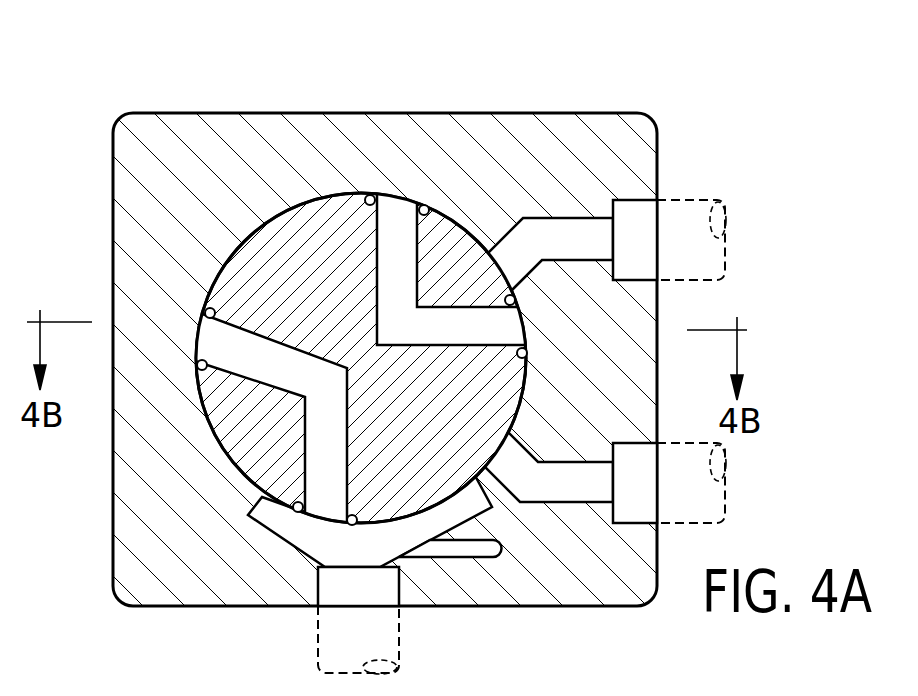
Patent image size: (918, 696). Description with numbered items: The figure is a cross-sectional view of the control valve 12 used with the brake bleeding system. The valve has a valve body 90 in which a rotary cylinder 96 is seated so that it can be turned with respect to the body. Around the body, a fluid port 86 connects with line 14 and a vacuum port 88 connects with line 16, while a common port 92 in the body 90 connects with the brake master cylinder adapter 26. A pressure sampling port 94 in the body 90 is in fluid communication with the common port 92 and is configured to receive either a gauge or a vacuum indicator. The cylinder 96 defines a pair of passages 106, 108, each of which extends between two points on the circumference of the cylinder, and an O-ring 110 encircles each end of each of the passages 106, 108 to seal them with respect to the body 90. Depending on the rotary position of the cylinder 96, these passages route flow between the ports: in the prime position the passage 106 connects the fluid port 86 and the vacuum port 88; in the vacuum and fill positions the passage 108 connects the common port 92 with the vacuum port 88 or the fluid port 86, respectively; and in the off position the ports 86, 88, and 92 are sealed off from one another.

The control valve 12 is at (459, 308).
The valve body 90 is at (245, 177).
The rotary cylinder 96 is at (322, 288).
The passage 106 is at (415, 337).
The passage 108 is at (246, 362).
The O-ring 110 is at (425, 206).
The fluid port 86 is at (652, 255).
The line 14 is at (703, 255).
The vacuum port 88 is at (652, 495).
The line 16 is at (703, 495).
The common port 92 is at (372, 602).
The brake master cylinder adapter 26 is at (372, 645).
The pressure sampling port 94 is at (498, 545).